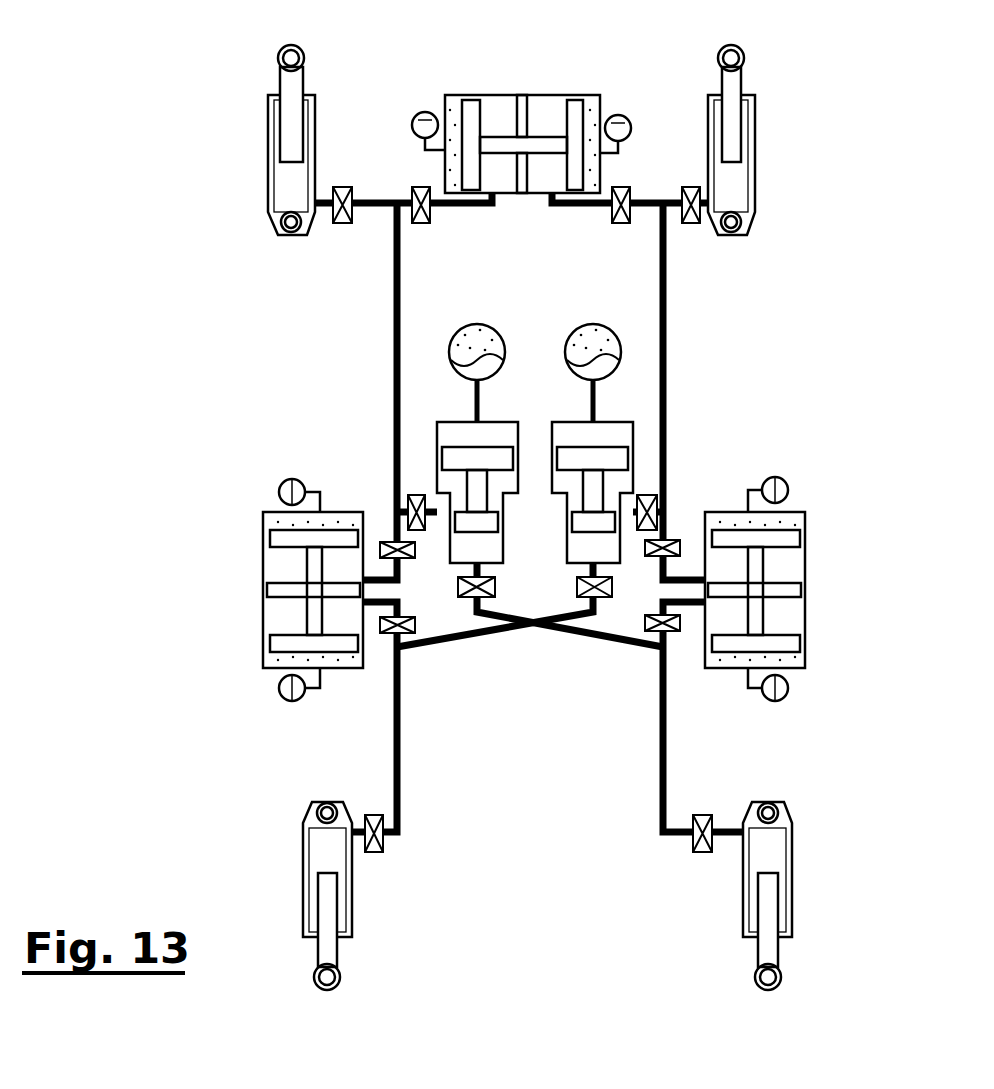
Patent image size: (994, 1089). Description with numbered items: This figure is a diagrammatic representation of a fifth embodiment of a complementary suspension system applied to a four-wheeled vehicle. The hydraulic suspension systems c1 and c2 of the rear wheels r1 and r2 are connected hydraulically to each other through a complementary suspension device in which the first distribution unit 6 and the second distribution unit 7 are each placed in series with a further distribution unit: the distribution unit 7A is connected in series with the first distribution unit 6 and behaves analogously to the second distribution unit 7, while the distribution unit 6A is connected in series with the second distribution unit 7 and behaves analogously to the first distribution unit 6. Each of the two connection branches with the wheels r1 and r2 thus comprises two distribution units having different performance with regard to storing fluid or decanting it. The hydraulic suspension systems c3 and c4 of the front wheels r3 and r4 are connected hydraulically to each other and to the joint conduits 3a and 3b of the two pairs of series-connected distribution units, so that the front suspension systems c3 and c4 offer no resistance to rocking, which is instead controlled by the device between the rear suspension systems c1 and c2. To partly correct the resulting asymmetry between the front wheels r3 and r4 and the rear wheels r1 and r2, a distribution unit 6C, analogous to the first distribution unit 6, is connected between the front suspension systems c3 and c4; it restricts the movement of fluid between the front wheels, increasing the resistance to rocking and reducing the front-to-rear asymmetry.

The hydraulic suspension system c1 is at (305, 867).
The hydraulic suspension system c2 is at (792, 850).
The hydraulic suspension system c3 is at (268, 158).
The hydraulic suspension system c4 is at (755, 142).
The rear wheel r1 is at (391, 997).
The rear wheel r2 is at (704, 997).
The front wheel r3 is at (350, 52).
The front wheel r4 is at (664, 52).
The first distribution unit 6 is at (250, 590).
The distribution unit 6A is at (820, 590).
The distribution unit 6C is at (505, 93).
The second distribution unit 7 is at (637, 425).
The distribution unit 7A is at (430, 425).
The joint conduit 3a is at (393, 532).
The joint conduit 3b is at (668, 530).